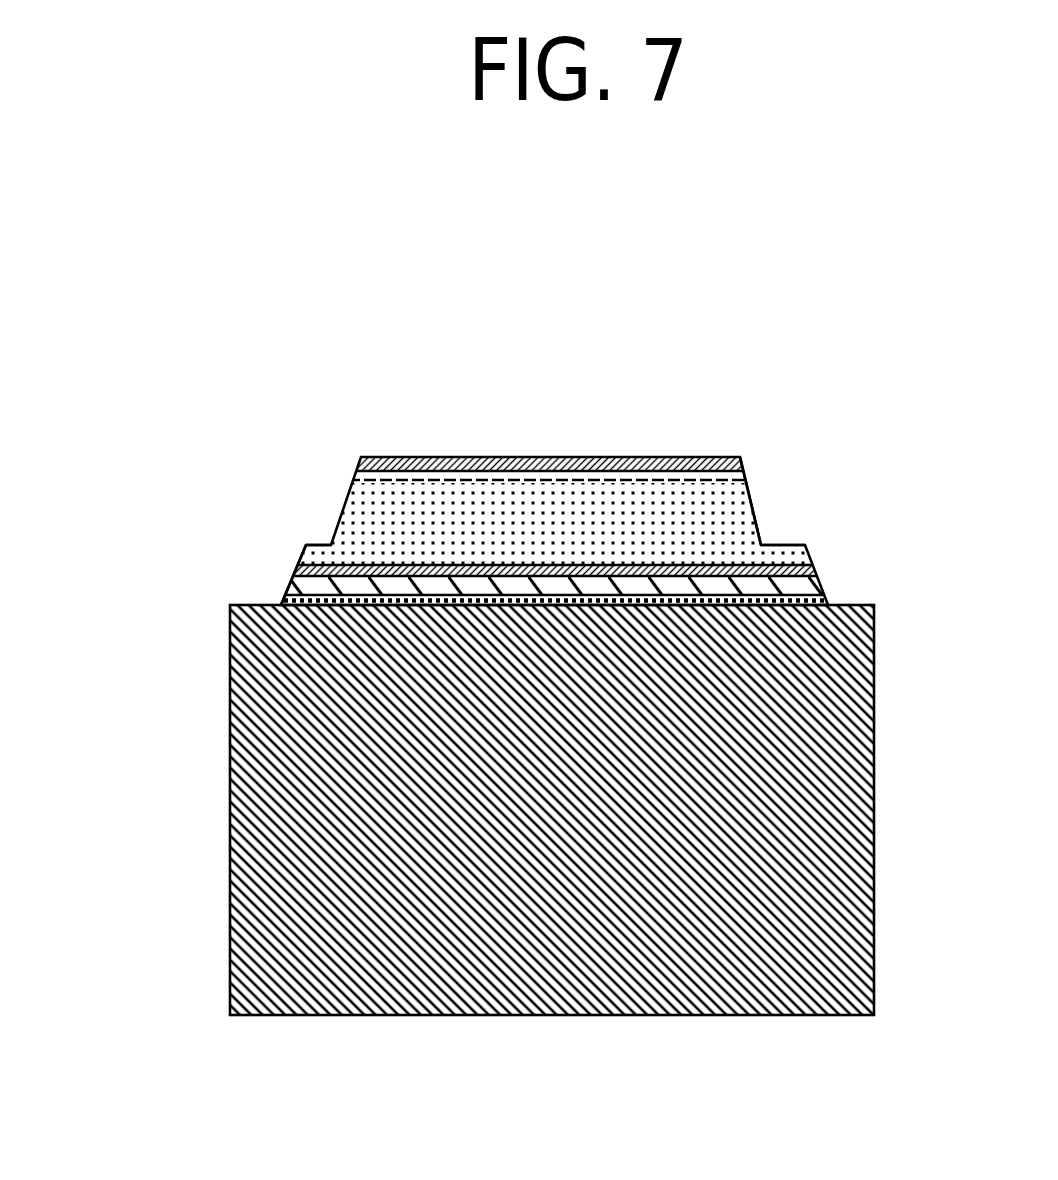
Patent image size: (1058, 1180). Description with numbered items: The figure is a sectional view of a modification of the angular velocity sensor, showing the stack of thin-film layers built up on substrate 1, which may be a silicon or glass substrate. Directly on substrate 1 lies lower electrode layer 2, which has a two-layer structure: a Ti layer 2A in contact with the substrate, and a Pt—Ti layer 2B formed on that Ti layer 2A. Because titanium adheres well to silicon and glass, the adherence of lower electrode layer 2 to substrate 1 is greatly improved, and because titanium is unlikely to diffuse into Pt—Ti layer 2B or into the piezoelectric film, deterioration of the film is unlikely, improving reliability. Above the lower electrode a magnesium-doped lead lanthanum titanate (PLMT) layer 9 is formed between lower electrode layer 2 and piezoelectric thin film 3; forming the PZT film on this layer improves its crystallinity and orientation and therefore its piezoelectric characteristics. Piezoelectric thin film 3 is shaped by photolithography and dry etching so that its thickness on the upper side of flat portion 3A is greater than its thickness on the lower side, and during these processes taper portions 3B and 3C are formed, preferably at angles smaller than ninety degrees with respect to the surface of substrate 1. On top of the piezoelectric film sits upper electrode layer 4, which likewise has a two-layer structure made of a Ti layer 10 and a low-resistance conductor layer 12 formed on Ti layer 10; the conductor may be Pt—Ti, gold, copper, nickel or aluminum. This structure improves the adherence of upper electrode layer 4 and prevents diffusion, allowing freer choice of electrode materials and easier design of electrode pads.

The substrate 1 is at (840, 743).
The lower electrode layer 2 is at (450, 447).
The Ti layer 2A is at (282, 496).
The Pt—Ti layer 2B is at (277, 585).
The piezoelectric thin film 3 is at (526, 513).
The flat portion 3A is at (775, 535).
The taper portion 3B is at (744, 493).
The taper portion 3C is at (803, 552).
The upper electrode layer 4 is at (558, 349).
The PLMT layer 9 is at (423, 565).
The Ti layer 10 is at (608, 456).
The low-resistance conductor layer 12 is at (650, 463).